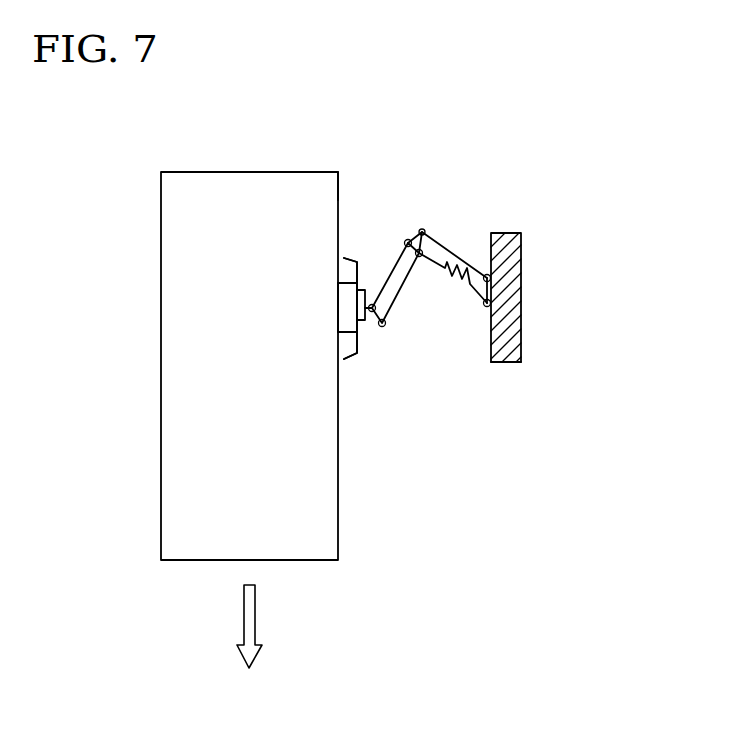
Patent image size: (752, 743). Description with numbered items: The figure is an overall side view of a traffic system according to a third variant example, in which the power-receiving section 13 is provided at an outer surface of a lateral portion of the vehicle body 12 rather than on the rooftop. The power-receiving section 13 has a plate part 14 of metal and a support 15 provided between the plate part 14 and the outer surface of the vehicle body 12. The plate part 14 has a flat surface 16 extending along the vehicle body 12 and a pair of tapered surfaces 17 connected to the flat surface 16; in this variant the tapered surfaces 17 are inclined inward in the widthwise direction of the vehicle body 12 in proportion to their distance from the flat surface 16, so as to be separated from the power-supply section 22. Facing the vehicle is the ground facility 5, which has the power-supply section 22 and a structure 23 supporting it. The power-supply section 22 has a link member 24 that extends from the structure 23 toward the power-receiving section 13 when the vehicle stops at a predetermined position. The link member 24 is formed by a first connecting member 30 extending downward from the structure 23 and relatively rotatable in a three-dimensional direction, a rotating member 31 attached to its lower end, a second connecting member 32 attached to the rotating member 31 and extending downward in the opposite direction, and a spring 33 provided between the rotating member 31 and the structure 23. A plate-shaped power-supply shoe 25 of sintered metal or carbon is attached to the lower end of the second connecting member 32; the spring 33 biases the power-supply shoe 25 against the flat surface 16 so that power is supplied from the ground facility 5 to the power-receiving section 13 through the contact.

The vehicle body 12 is at (339, 523).
The power-receiving section 13 is at (354, 181).
The plate part 14 is at (432, 350).
The support 15 is at (340, 312).
The flat surface 16 is at (357, 343).
The tapered surfaces 17 is at (344, 257).
The power-supply section 22 is at (569, 239).
The structure 23 is at (515, 333).
The link member 24 is at (451, 195).
The power-supply shoe 25 is at (363, 321).
The first connecting member 30 is at (443, 244).
The rotating member 31 is at (424, 228).
The second connecting member 32 is at (393, 262).
The spring 33 is at (477, 260).
The ground facility 5 is at (504, 363).